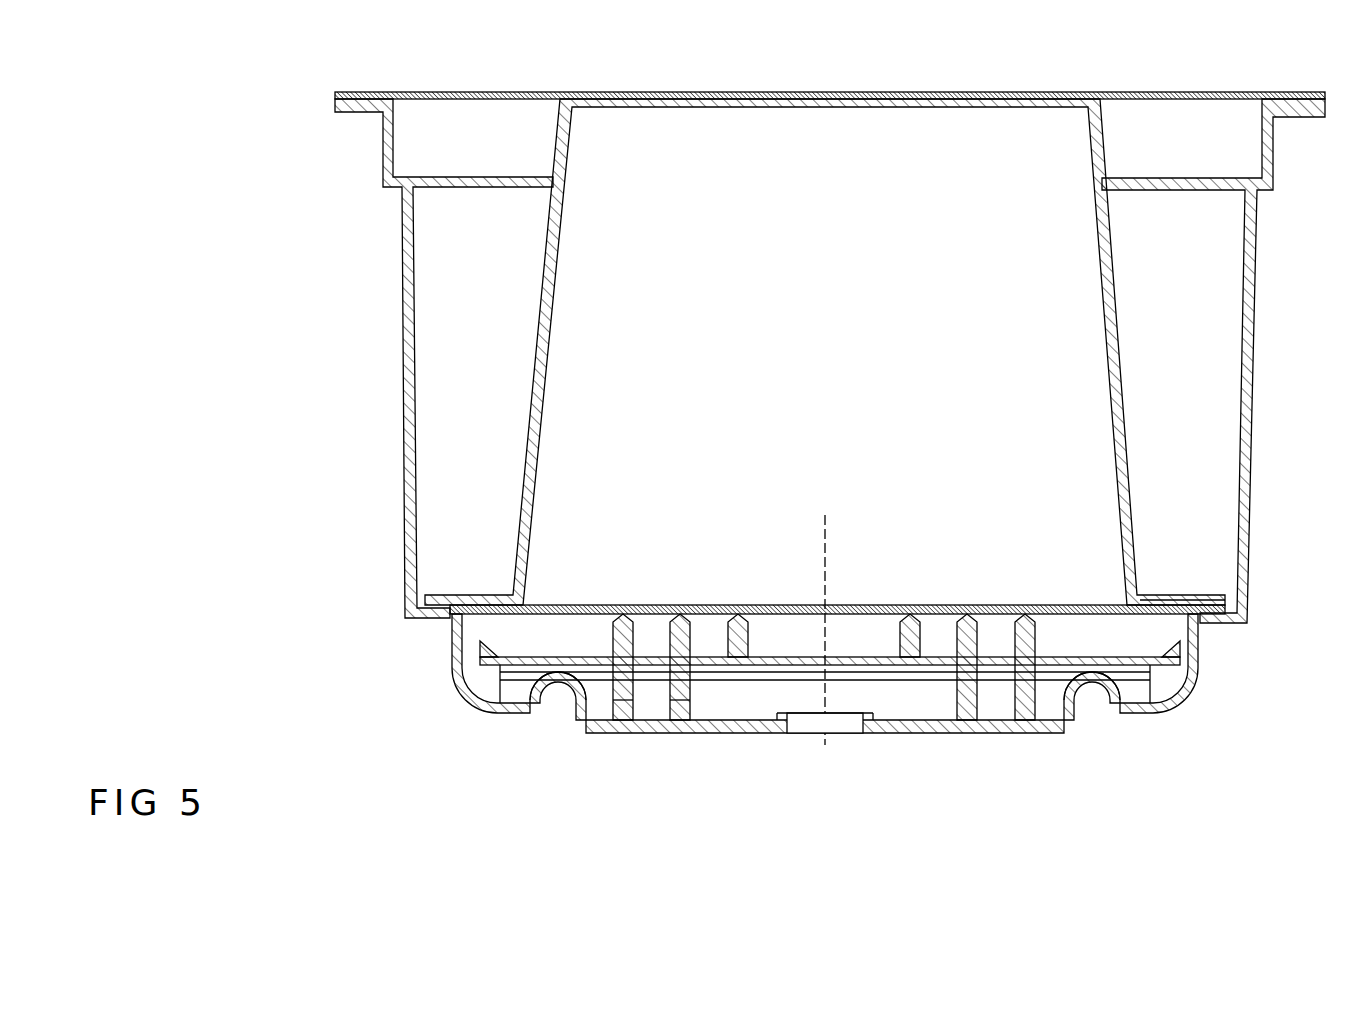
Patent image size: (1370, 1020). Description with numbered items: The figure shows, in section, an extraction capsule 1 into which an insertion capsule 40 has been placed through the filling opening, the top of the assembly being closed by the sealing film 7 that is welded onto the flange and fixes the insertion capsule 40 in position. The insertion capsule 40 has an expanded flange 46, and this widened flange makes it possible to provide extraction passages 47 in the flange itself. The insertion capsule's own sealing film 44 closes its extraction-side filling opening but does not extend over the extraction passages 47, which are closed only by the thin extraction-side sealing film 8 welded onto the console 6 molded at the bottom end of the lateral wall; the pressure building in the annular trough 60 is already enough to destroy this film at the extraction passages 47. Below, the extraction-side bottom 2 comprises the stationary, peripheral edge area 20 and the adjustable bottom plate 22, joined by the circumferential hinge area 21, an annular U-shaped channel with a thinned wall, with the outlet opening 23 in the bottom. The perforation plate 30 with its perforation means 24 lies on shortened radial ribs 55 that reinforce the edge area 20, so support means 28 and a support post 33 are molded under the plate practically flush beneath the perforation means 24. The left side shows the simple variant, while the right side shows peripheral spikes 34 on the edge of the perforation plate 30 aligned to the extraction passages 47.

The extraction capsule 1 is at (307, 233).
The extraction-side bottom 2 is at (943, 767).
The console 6 is at (430, 625).
The sealing film that closes filling opening 7 is at (497, 91).
The extraction-side sealing film on console 8 is at (777, 632).
The stationary, peripheral edge area 20 is at (500, 713).
The circumferential hinge area 21 is at (553, 677).
The bottom plate 22 is at (1007, 733).
The outlet opening 23 is at (805, 722).
The perforation means 24 is at (627, 624).
The support means 28 is at (622, 710).
The perforation plate 30 is at (1060, 657).
The support post 33 is at (685, 700).
The peripheral spikes 34 is at (1198, 648).
The insertion capsule 40 is at (807, 171).
The sealing film of extraction-side filling opening 44 is at (884, 608).
The expanded flange 46 is at (1157, 602).
The extraction passages 47 is at (1187, 605).
The shortened radial ribs 55 is at (1165, 683).
The annular trough 60 is at (494, 258).